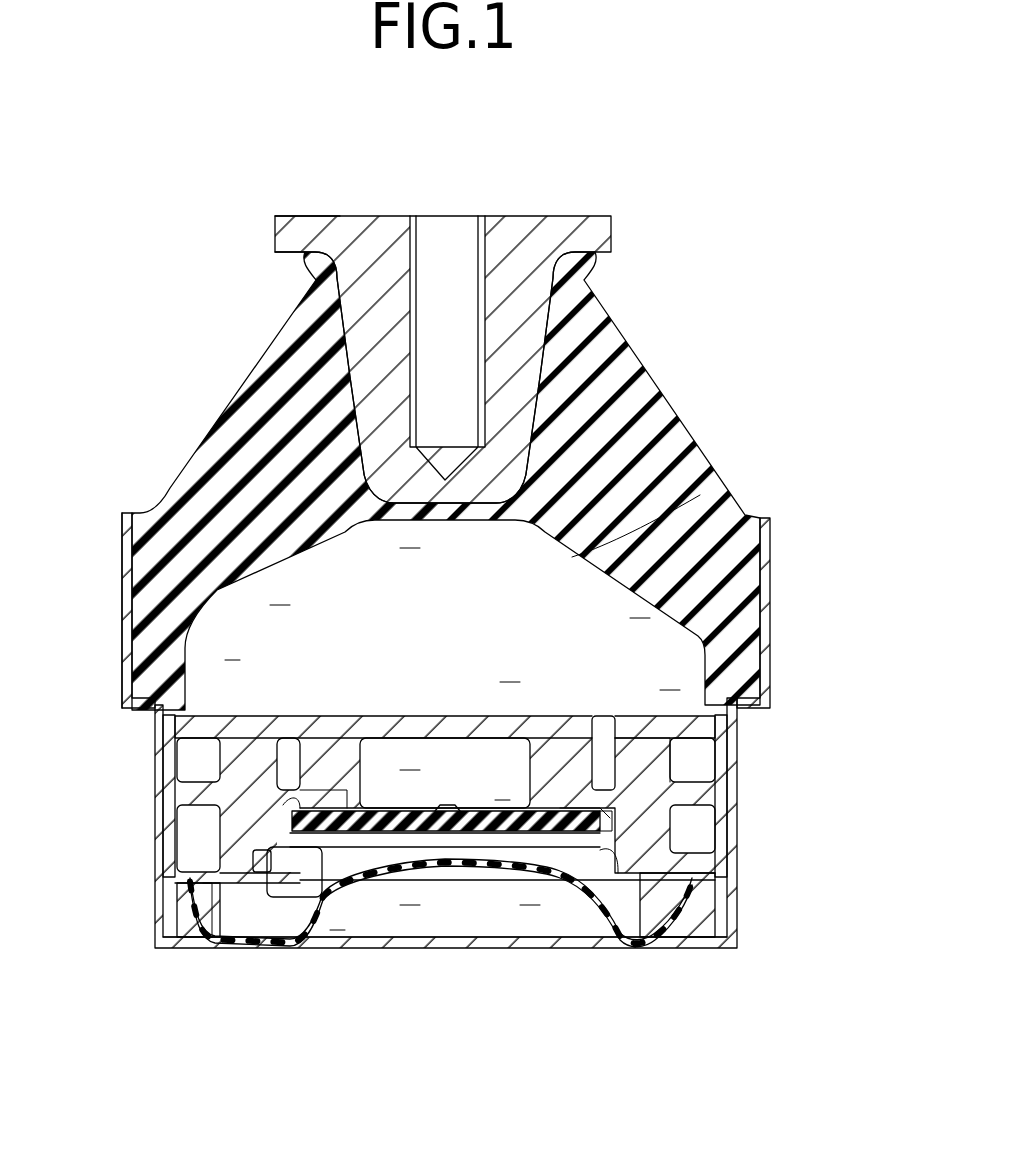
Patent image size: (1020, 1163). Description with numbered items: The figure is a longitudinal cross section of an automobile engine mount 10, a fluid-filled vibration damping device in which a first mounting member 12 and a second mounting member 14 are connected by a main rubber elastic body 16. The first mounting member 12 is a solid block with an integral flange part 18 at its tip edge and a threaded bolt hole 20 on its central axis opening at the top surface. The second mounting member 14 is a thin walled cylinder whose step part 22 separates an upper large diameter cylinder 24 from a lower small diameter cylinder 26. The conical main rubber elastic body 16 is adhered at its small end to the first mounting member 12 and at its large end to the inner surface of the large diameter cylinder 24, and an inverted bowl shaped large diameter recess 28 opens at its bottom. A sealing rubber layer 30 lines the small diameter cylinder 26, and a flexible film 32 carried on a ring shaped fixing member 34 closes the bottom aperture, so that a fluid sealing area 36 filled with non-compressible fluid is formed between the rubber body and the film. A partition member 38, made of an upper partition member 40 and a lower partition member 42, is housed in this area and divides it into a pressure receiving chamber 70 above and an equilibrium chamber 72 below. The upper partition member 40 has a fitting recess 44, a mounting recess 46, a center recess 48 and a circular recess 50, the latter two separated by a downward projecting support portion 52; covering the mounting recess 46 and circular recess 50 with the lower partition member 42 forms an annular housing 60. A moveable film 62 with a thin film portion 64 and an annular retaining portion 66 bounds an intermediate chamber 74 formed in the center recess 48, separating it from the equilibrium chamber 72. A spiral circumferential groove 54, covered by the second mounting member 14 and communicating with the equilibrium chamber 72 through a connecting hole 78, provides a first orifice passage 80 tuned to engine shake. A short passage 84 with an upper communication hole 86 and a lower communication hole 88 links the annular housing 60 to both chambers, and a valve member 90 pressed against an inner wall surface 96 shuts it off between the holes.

The engine mount 10 is at (680, 280).
The first mounting member 12 is at (515, 216).
The second mounting member 14 is at (773, 607).
The main rubber elastic body 16 is at (632, 387).
The flange part 18 is at (300, 232).
The bolt hole 20 is at (426, 242).
The step part 22 is at (148, 706).
The large diameter cylinder 24 is at (124, 578).
The small diameter cylinder 26 is at (164, 900).
The large diameter recess 28 is at (572, 557).
The sealing rubber layer 30 is at (172, 853).
The flexible film 32 is at (255, 915).
The fixing member 34 is at (180, 918).
The fluid sealing area 36 is at (327, 580).
The partition member 38 is at (238, 716).
The upper partition member 40 is at (655, 745).
The lower partition member 42 is at (650, 875).
The fitting recess 44 is at (268, 885).
The mounting recess 46 is at (331, 850).
The center recess 48 is at (376, 770).
The circular recess 50 is at (276, 766).
The support portion 52 is at (348, 794).
The circumferential groove 54 is at (186, 777).
The annular housing 60 is at (278, 768).
The moveable film 62 is at (473, 832).
The film portion 64 is at (408, 824).
The retaining portion 66 is at (570, 824).
The pressure receiving chamber 70 is at (456, 631).
The equilibrium chamber 72 is at (263, 931).
The intermediate chamber 74 is at (453, 785).
The connecting hole 78 is at (212, 885).
The first orifice passage 80 is at (697, 825).
The short passage 84 is at (608, 751).
The upper communication hole 86 is at (604, 748).
The lower communication hole 88 is at (617, 842).
The valve member 90 is at (608, 820).
The inner wall surface 96 is at (283, 805).